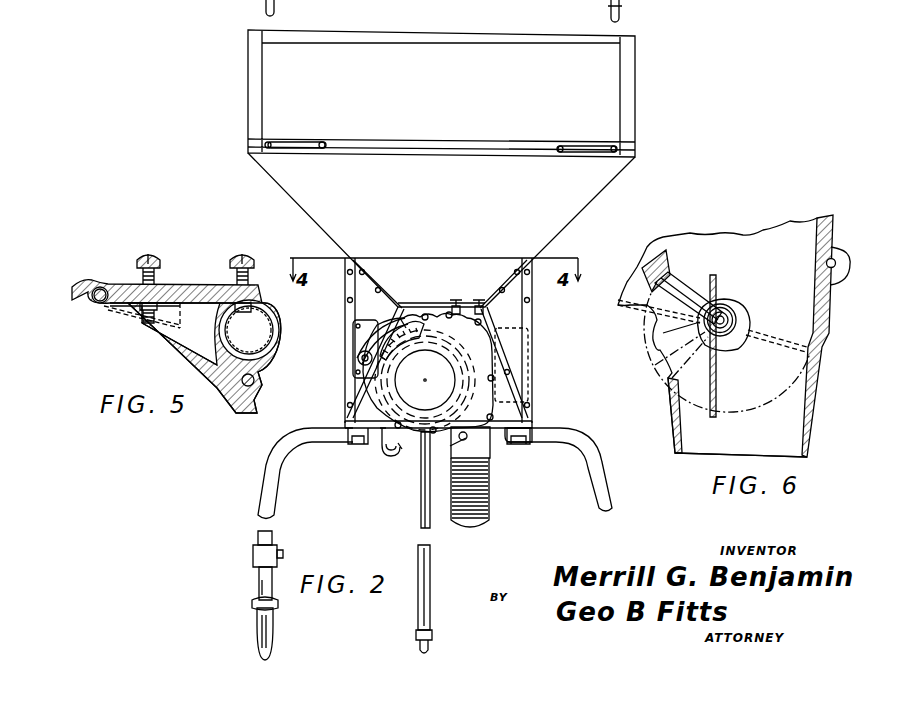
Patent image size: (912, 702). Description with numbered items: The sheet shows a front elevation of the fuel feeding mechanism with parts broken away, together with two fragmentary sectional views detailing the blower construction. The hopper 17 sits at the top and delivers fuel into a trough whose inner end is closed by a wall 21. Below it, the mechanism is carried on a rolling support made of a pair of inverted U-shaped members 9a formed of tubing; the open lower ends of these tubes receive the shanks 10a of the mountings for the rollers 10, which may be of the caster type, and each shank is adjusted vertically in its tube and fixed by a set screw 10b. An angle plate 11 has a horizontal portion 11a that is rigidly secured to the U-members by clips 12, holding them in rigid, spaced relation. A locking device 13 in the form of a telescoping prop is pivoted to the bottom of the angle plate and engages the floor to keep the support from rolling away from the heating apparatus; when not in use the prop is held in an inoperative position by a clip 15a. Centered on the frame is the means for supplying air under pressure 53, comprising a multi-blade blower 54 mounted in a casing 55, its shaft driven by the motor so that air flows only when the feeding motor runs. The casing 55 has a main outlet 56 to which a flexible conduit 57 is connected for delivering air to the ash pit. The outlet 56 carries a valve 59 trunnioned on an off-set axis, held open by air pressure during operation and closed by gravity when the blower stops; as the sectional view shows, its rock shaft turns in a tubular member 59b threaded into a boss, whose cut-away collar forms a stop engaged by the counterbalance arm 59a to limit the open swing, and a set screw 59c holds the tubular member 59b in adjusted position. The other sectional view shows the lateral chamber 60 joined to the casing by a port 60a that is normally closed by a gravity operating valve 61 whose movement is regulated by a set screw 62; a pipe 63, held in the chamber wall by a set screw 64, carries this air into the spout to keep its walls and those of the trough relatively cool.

In FIG. 2, the inverted U-shaped members 9a is at (260, 486).
In FIG. 2, the rollers 10 is at (623, 16).
In FIG. 2, the shanks 10a is at (258, 585).
In FIG. 2, the set screw 10b is at (283, 550).
In FIG. 2, the angle plate 11 is at (428, 289).
In FIG. 2, the horizontal portion 11a is at (532, 428).
In FIG. 2, the clips 12 is at (368, 446).
In FIG. 2, the locking device 13 is at (441, 599).
In FIG. 2, the clip 15a is at (388, 458).
In FIG. 2, the hopper 17 is at (441, 169).
In FIG. 2, the wall 21 is at (432, 316).
In FIG. 2, the means for supplying air under pressure 53 is at (432, 380).
In FIG. 2, the blower 54 is at (405, 334).
In FIG. 2, the casing 55 is at (487, 365).
In FIG. 6, the casing 55 is at (803, 225).
In FIG. 2, the main outlet 56 is at (490, 450).
In FIG. 6, the main outlet 56 is at (808, 438).
In FIG. 2, the flexible conduit 57 is at (490, 500).
In FIG. 6, the valve 59 is at (716, 366).
In FIG. 2, the counterbalance arm 59a is at (456, 437).
In FIG. 6, the counterbalance arm 59a is at (673, 293).
In FIG. 6, the tubular member 59b is at (740, 313).
In FIG. 6, the set screw 59c is at (698, 325).
In FIG. 5, the lateral chamber 60 is at (205, 356).
In FIG. 5, the port 60a is at (142, 328).
In FIG. 5, the gravity operating valve 61 is at (180, 300).
In FIG. 2, the set screw 62 is at (460, 308).
In FIG. 5, the set screw 62 is at (137, 262).
In FIG. 2, the pipe 63 is at (482, 306).
In FIG. 5, the pipe 63 is at (222, 318).
In FIG. 5, the set screw 64 is at (256, 262).